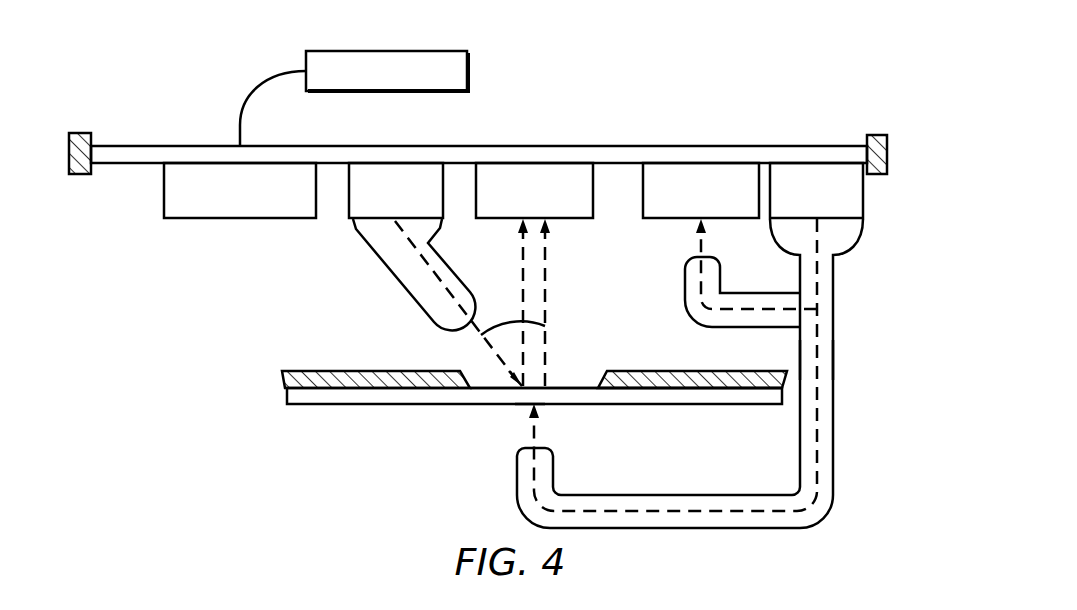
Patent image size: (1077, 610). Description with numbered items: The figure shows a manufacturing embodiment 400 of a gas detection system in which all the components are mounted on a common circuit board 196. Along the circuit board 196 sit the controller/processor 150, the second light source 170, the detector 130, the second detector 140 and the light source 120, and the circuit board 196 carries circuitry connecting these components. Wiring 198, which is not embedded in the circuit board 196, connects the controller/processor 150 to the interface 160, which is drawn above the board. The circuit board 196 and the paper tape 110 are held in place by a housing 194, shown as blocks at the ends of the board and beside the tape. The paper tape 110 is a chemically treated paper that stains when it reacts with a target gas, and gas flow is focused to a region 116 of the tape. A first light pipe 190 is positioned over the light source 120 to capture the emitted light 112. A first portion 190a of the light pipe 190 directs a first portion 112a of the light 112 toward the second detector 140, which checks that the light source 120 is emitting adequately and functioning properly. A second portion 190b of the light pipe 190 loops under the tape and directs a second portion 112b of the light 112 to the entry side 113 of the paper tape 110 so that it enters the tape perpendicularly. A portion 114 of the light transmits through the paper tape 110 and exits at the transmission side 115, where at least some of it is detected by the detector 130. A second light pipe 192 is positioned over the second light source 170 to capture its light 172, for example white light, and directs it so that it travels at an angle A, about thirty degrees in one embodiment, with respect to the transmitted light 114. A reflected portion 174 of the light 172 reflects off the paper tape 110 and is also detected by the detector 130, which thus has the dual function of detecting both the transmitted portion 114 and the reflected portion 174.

The manufacturing embodiment 400 is at (862, 58).
The paper tape 110 is at (334, 404).
The light 112 is at (820, 320).
The first portion of the light 112a is at (702, 275).
The second portion of the light 112b is at (537, 430).
The entry side 113 is at (666, 404).
The transmitted portion of light 114 is at (547, 302).
The transmission side 115 is at (568, 387).
The region of the paper tape 116 is at (526, 396).
The light source 120 is at (864, 201).
The detector 130 is at (516, 219).
The second detector 140 is at (675, 219).
The controller/processor 150 is at (224, 218).
The interface 160 is at (420, 51).
The second light source 170 is at (357, 230).
The light 172 is at (496, 348).
The reflected portion of the light 174 is at (526, 272).
The first light pipe 190 is at (844, 247).
The first portion of the light pipe 190a is at (722, 328).
The second portion of the light pipe 190b is at (834, 354).
The second light pipe 192 is at (393, 277).
The housing 194 is at (77, 133).
The circuit board 196 is at (127, 146).
The wiring 198 is at (253, 97).
The angle A is at (502, 328).